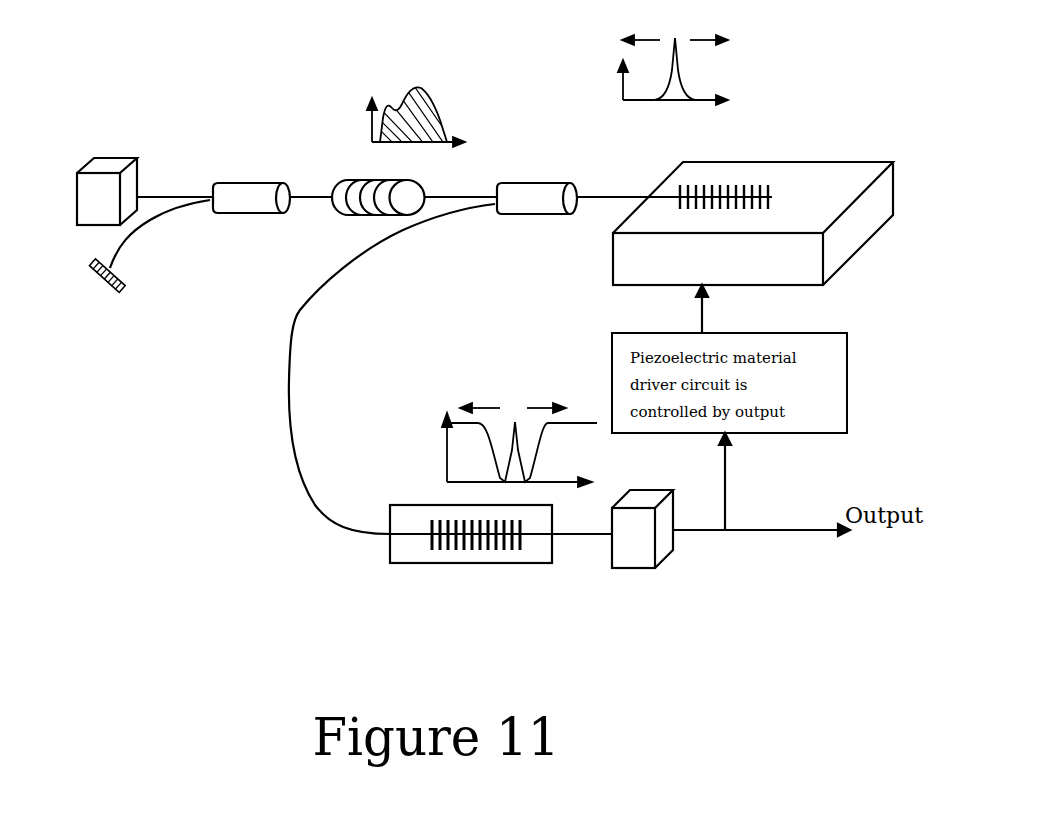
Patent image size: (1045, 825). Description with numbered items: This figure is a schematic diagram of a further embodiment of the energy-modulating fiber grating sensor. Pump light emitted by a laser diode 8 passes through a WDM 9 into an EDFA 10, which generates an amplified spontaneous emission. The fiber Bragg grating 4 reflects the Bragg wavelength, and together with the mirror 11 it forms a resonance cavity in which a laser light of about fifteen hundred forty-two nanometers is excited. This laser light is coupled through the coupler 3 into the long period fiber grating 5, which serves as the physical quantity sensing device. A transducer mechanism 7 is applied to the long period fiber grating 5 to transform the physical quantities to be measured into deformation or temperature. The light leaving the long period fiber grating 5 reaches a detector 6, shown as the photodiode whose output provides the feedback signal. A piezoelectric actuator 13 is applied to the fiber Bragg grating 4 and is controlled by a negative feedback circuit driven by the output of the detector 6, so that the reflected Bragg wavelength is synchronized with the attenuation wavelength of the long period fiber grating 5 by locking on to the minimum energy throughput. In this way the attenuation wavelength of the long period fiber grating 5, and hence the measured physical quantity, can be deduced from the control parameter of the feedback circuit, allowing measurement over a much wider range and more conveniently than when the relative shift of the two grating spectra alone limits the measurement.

The coupler 3 is at (559, 175).
The fiber Bragg grating 4 is at (748, 175).
The long period fiber grating 5 is at (428, 560).
The photodetector 6 is at (610, 560).
The transducer mechanism 7 is at (375, 551).
The laser diode 8 is at (78, 172).
The WDM 9 is at (238, 180).
The EDFA 10 is at (364, 170).
The mirror 11 is at (105, 308).
The piezoelectric actuator 13 is at (600, 254).